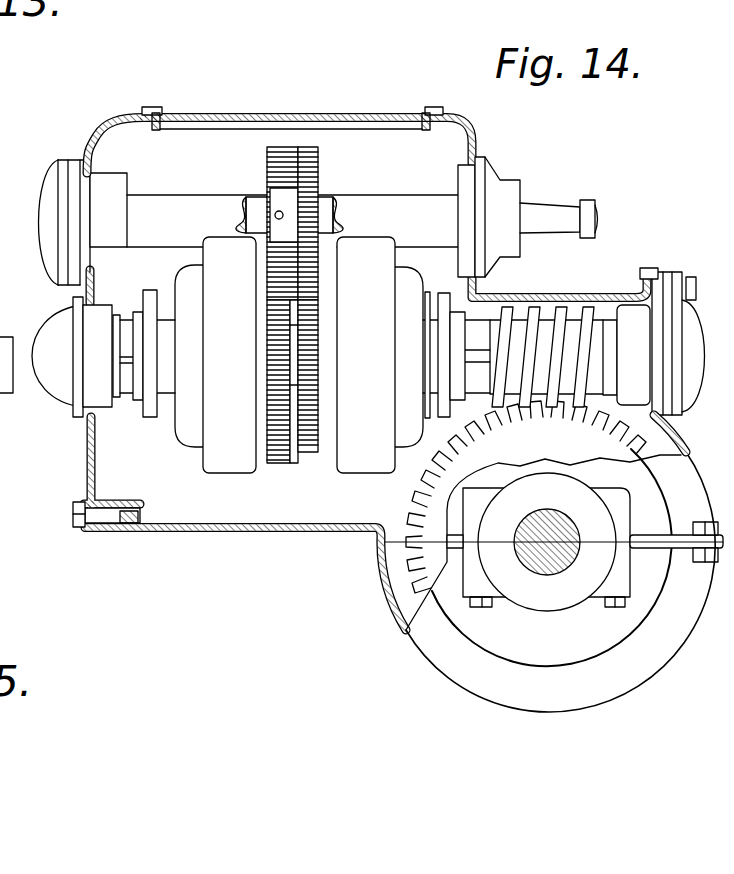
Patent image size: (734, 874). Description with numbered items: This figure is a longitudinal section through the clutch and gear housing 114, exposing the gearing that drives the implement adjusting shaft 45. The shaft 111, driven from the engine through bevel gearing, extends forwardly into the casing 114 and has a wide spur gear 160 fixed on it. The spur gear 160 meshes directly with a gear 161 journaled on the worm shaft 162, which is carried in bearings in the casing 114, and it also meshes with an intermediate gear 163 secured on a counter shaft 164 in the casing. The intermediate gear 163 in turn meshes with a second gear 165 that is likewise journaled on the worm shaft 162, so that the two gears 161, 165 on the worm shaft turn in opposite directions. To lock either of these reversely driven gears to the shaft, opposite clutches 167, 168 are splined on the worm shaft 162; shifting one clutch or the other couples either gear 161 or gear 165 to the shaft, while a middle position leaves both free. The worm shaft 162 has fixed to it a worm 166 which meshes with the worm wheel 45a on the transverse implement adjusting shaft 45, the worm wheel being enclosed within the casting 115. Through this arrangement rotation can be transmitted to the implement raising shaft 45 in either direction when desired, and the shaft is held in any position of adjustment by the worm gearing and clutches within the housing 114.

The wide spur gear 160 is at (278, 157).
The clutch and gear housing 114 is at (353, 112).
The shaft 111 is at (540, 212).
The intermediate gear 163 is at (318, 170).
The counter shaft 164 is at (328, 193).
The worm 166 is at (573, 295).
The worm shaft 162 is at (477, 322).
The clutch 167 is at (203, 470).
The gear 161 is at (263, 472).
The second gear 165 is at (308, 455).
The clutch 168 is at (358, 468).
The worm wheel 45a is at (415, 524).
The implement adjusting shaft 45 is at (520, 562).
The casting 115 is at (447, 667).